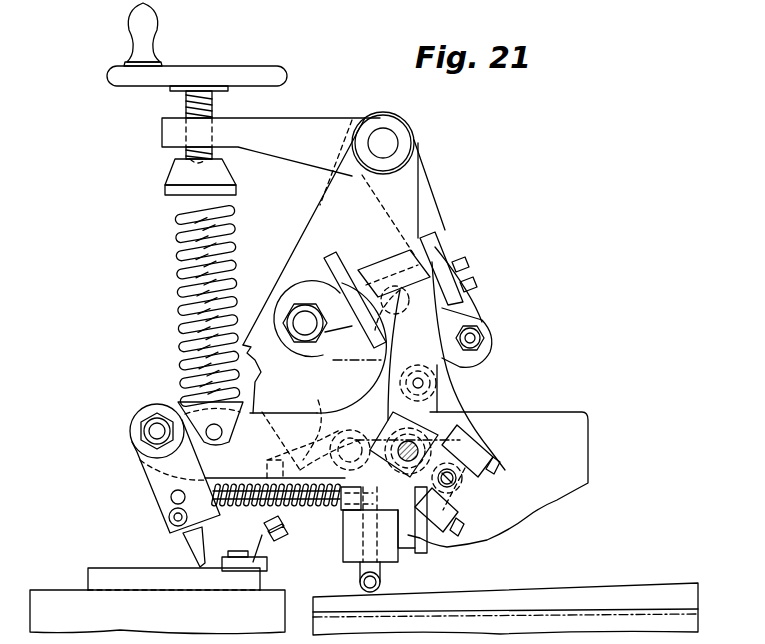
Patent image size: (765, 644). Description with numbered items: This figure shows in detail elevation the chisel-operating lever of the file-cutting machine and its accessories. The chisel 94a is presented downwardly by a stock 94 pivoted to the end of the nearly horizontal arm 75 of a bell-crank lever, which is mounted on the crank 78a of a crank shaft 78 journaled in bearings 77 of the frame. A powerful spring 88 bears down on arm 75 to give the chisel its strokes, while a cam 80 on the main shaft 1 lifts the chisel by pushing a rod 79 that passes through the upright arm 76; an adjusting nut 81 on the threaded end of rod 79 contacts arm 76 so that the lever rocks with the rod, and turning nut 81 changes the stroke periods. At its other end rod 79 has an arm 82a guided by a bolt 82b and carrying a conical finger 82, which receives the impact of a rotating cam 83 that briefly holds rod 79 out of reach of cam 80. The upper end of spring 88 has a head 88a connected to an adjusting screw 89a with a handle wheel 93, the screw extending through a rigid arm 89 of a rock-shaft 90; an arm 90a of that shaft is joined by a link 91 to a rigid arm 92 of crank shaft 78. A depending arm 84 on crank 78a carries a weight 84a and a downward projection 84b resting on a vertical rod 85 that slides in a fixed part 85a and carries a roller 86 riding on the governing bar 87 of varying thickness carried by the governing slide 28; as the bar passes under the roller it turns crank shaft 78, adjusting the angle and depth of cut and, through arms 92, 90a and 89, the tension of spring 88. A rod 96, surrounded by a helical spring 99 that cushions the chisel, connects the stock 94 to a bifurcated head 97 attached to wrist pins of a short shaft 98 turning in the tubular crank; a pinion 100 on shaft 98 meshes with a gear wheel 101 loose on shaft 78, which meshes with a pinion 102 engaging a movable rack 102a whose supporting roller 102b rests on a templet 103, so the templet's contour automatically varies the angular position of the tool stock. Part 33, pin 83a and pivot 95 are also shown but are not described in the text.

The main shaft 1 is at (312, 323).
The governing slide 28 is at (620, 614).
The rod 33 is at (326, 205).
The operating arm 75 is at (256, 412).
The upright arm 76 is at (445, 345).
The bearings 77 is at (582, 428).
The crank shaft 78 is at (418, 452).
The crank 78a is at (468, 470).
The rod 79 is at (345, 330).
The cam 80 is at (296, 300).
The adjusting nut 81 is at (338, 256).
The conical finger 82 is at (456, 306).
The arm 82a is at (446, 246).
The rod or bolt 82b is at (478, 290).
The rotating cam 83 is at (482, 322).
The pin 83a is at (404, 314).
The depending arm 84 is at (265, 462).
The weight 84a is at (298, 462).
The downward projection 84b is at (370, 536).
The vertical rod 85 is at (362, 567).
The fixed part 85a is at (394, 548).
The roller 86 is at (382, 586).
The governing bar 87 is at (522, 605).
The spring 88 is at (174, 240).
The head 88a is at (172, 187).
The rigid arm 89 is at (268, 152).
The adjusting screw 89a is at (185, 101).
The shaft 90 is at (388, 143).
The arm 90a is at (432, 182).
The link 91 is at (440, 362).
The rigid arm 92 is at (432, 418).
The handle wheel 93 is at (280, 72).
The stock 94 is at (146, 468).
The chisel 94a is at (190, 543).
The pivot 95 is at (152, 430).
The rod 96 is at (252, 508).
The bifurcated head 97 is at (421, 525).
The short shaft 98 is at (470, 490).
The helical spring 99 is at (238, 487).
The pinion 100 is at (460, 476).
The gear wheel 101 is at (387, 437).
The pinion 102 is at (322, 500).
The movable rack 102a is at (319, 430).
The supporting roller 102b is at (264, 582).
The templet 103 is at (262, 570).